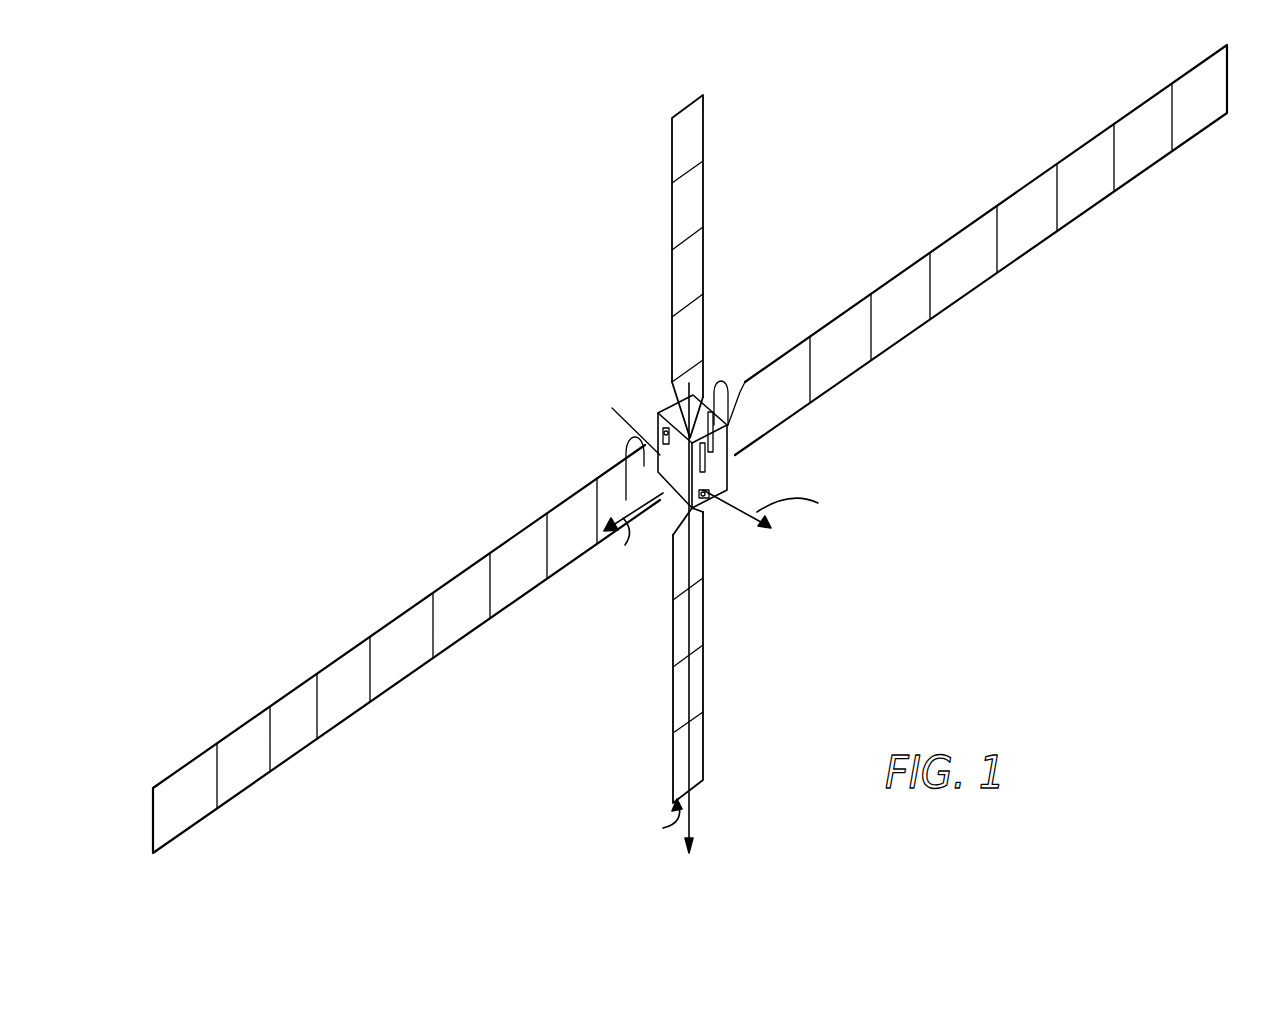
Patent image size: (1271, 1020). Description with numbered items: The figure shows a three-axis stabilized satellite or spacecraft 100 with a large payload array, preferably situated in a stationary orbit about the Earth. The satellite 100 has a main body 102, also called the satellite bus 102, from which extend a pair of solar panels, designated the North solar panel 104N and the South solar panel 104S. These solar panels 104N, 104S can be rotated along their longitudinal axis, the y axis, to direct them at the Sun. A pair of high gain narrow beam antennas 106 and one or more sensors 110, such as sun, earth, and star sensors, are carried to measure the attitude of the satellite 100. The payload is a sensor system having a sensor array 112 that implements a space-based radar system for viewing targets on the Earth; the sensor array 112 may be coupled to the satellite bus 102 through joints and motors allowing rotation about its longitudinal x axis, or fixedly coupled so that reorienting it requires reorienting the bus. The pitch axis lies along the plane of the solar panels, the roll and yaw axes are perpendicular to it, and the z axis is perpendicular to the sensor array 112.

The satellite 100 is at (789, 219).
The main body 102 is at (725, 447).
The North solar panel 104N is at (695, 201).
The South solar panel 104S is at (700, 678).
The high gain narrow beam antenna 106 is at (727, 382).
The sensor 110 is at (663, 418).
The sensor array 112 is at (1028, 237).